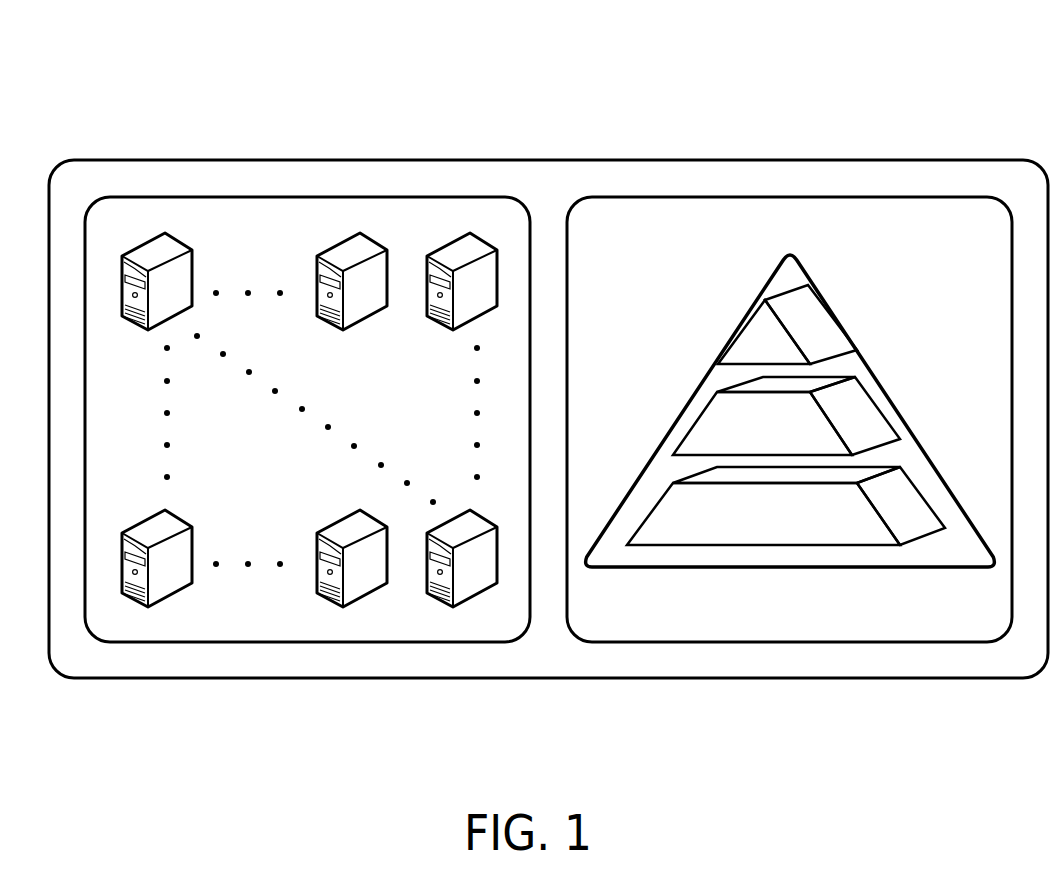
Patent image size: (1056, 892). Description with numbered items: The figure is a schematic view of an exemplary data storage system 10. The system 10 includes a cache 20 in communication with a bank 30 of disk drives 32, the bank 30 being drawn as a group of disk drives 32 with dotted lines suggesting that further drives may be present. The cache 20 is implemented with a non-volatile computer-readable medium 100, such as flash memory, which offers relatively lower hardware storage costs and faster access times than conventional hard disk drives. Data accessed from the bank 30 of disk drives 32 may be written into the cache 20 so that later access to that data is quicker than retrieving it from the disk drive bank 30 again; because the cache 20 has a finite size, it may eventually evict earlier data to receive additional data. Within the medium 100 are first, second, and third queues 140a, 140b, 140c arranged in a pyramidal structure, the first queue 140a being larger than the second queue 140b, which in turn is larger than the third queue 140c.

The data storage system 10 is at (573, 70).
The cache 20 is at (790, 197).
The bank of disk drives 30 is at (305, 197).
The disk drive 32 is at (136, 524).
The non-volatile computer-readable medium 100 is at (870, 347).
The first queue 140a is at (786, 506).
The second queue 140b is at (786, 416).
The third queue 140c is at (787, 324).